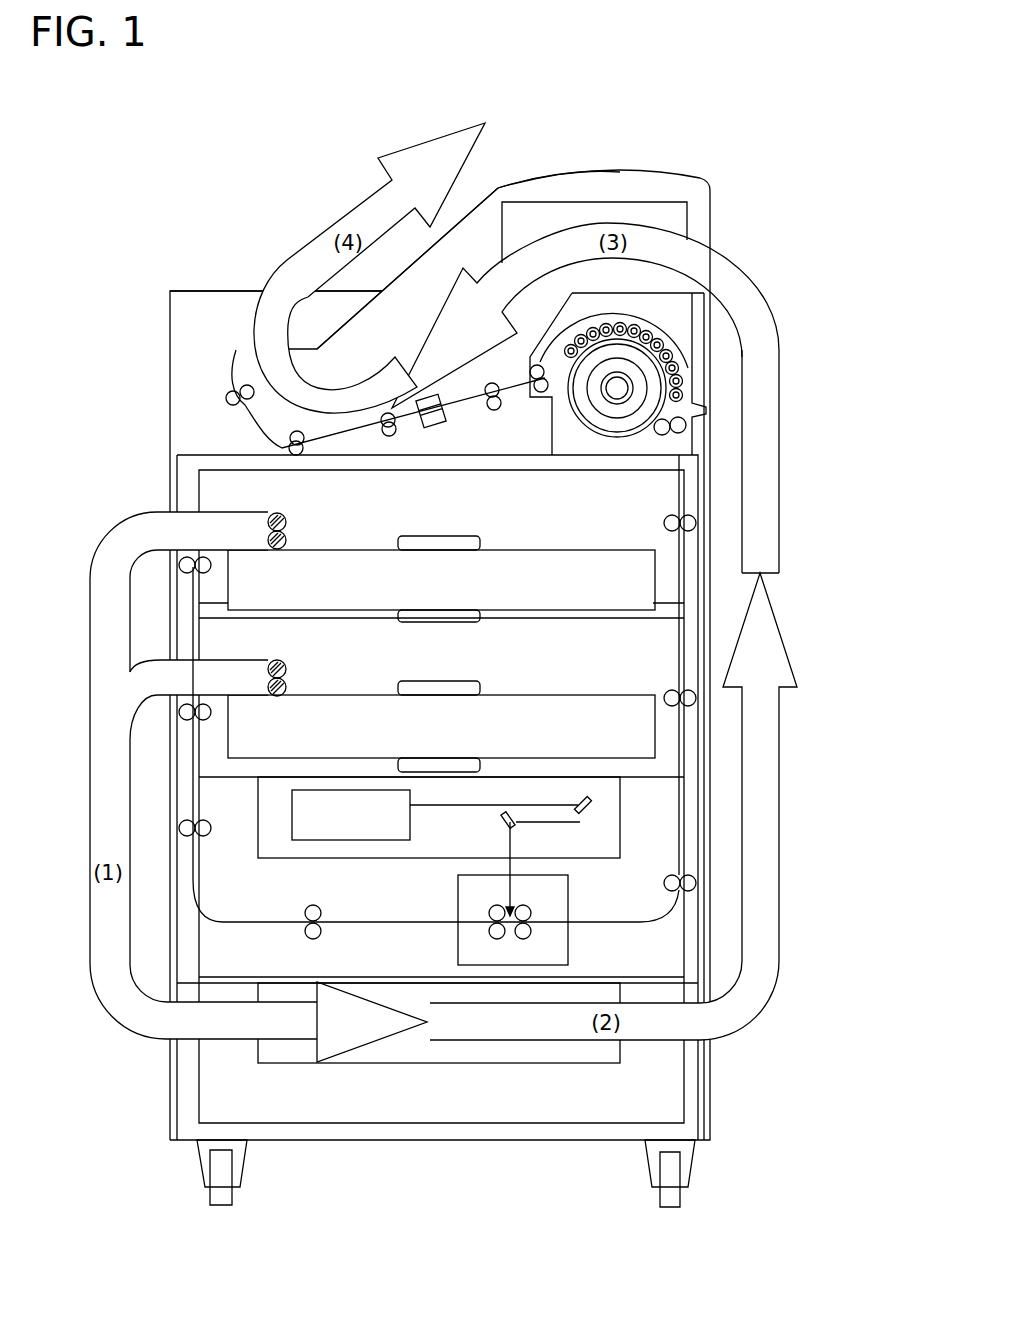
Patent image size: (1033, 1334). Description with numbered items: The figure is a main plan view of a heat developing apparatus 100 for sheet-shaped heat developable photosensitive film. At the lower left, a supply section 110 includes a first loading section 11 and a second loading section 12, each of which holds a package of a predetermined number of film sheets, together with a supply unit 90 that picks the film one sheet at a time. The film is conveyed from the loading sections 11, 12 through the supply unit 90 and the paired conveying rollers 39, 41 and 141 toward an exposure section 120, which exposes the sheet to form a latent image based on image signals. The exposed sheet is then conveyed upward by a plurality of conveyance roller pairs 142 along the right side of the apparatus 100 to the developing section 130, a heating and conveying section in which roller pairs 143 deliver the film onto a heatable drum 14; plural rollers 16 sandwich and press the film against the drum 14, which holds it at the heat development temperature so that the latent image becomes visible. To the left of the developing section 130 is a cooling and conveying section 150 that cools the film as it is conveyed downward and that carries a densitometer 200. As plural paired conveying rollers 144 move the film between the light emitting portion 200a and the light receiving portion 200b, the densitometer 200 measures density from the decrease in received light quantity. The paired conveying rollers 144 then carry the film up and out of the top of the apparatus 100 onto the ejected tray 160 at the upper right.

The heat developing apparatus 100 is at (608, 139).
The ejected tray 160 is at (497, 185).
The cooling and conveying section 150 is at (213, 291).
The paired conveying rollers 144 is at (226, 400).
The densitometer 200 is at (458, 440).
The light emitting portion 200a is at (445, 420).
The light receiving portion 200b is at (437, 397).
The developing section 130 is at (688, 331).
The rollers 16 is at (682, 382).
The roller pairs 143 is at (690, 422).
The drum 14 is at (619, 448).
The conveyance roller pairs 142 is at (692, 522).
The first loading section 11 is at (638, 572).
The supply section 110 is at (634, 659).
The second loading section 12 is at (638, 742).
The exposure section 120 is at (631, 816).
The paired conveying rollers 39 is at (185, 570).
The paired conveying rollers 41 is at (185, 715).
The paired conveying rollers 141 is at (185, 830).
The supply unit 90 is at (290, 669).